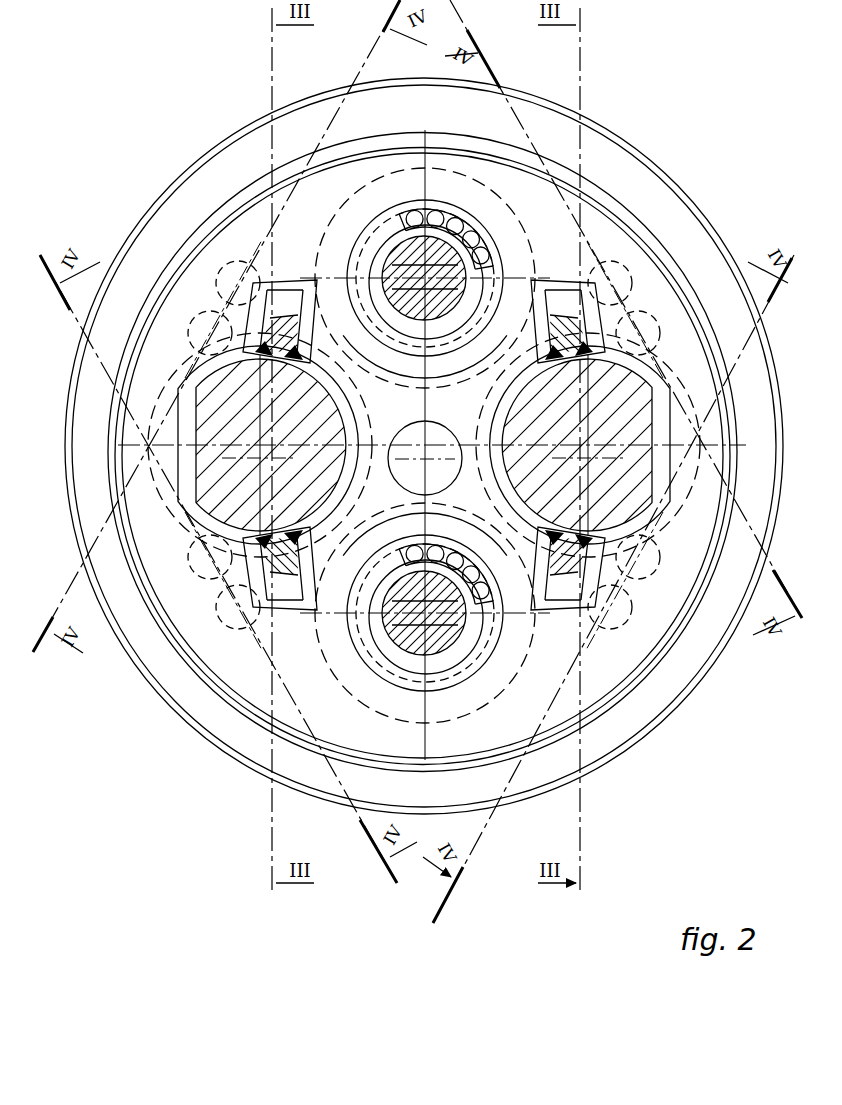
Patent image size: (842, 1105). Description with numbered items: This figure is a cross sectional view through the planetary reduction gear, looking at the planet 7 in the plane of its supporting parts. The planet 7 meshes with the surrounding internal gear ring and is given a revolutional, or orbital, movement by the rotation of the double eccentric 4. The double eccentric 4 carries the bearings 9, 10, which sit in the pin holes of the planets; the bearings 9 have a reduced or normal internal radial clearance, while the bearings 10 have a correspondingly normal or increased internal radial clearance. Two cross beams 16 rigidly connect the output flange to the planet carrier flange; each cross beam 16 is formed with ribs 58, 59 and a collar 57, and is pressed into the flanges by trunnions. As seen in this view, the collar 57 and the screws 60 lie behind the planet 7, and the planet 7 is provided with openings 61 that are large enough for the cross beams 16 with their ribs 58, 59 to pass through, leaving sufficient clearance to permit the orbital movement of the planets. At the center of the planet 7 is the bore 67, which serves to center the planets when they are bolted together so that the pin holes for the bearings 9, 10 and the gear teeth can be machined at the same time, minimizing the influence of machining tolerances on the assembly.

The double eccentric 4 is at (437, 255).
The planet 7 is at (542, 213).
The bearing 9 is at (370, 667).
The bearing 10 is at (390, 225).
The cross beam 16 is at (230, 490).
The collar 57 is at (185, 358).
The rib 58 is at (227, 287).
The rib 59 is at (237, 622).
The screw 60 is at (203, 323).
The opening 61 is at (568, 332).
The bore 67 is at (442, 467).